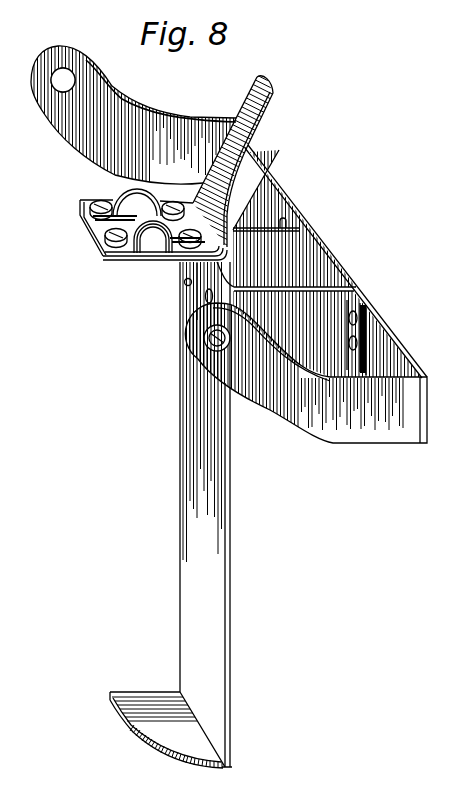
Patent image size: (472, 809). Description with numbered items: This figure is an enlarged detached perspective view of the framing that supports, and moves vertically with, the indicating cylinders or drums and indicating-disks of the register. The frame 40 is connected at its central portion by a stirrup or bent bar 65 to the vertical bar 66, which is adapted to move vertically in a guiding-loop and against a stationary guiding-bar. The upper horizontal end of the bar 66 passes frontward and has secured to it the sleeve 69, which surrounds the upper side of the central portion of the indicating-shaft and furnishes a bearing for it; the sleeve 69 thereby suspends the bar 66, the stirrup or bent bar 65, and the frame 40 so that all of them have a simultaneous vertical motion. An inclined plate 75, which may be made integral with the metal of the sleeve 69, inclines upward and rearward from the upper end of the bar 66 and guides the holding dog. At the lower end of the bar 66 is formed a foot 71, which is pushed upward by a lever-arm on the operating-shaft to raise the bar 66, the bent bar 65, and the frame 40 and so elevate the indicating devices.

The frame 40 is at (141, 110).
The inclined plate 75 is at (258, 121).
The sleeve 69 is at (124, 198).
The stirrup or bent bar 65 is at (180, 283).
The vertical bar 66 is at (180, 540).
The foot 71 is at (168, 727).